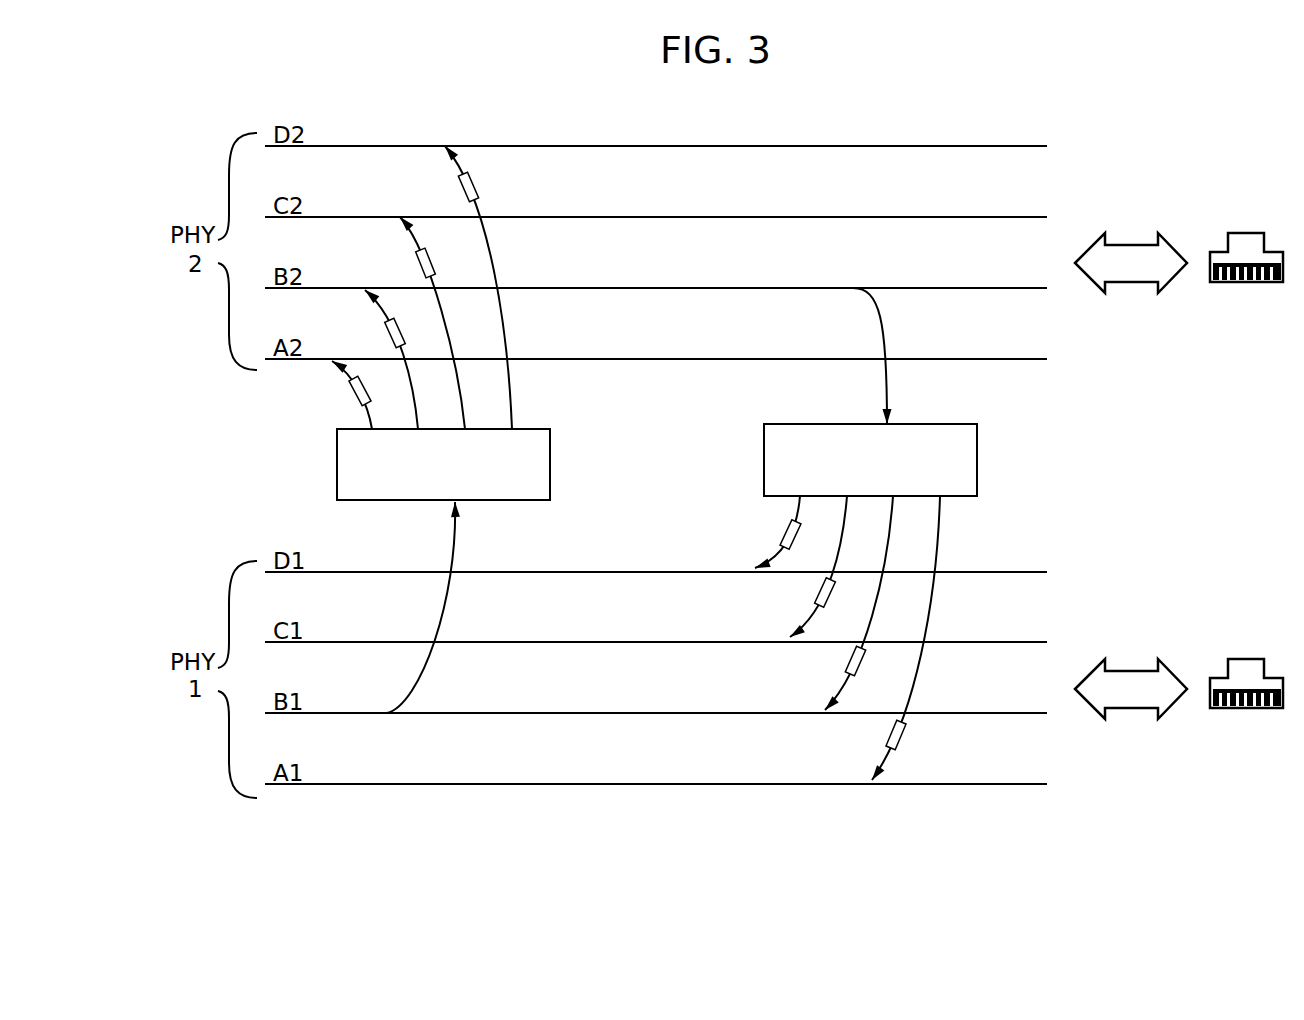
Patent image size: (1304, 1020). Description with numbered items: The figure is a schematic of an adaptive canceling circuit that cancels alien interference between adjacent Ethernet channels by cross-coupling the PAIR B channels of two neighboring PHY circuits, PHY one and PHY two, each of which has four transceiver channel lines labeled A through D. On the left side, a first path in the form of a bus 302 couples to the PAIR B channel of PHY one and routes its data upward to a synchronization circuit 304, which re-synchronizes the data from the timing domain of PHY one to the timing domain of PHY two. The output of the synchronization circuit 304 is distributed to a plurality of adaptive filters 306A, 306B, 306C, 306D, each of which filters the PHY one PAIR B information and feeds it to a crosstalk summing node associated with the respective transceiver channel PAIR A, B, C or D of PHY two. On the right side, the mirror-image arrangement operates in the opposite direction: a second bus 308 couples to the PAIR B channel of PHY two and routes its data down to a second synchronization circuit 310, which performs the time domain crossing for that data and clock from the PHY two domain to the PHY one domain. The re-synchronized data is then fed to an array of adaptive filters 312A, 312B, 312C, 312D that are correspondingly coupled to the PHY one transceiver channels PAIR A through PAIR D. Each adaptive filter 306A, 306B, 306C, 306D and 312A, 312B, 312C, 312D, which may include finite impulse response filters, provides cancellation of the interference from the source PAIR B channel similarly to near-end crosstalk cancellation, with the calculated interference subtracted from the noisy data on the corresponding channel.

The bus 302 is at (465, 553).
The synchronization circuit 304 is at (553, 471).
The adaptive filter 306A is at (354, 393).
The adaptive filter 306B is at (388, 335).
The adaptive filter 306C is at (418, 265).
The adaptive filter 306D is at (460, 190).
The second bus 308 is at (890, 377).
The second synchronization circuit 310 is at (981, 465).
The adaptive filter 312A is at (870, 736).
The adaptive filter 312B is at (840, 660).
The adaptive filter 312C is at (815, 589).
The adaptive filter 312D is at (780, 535).